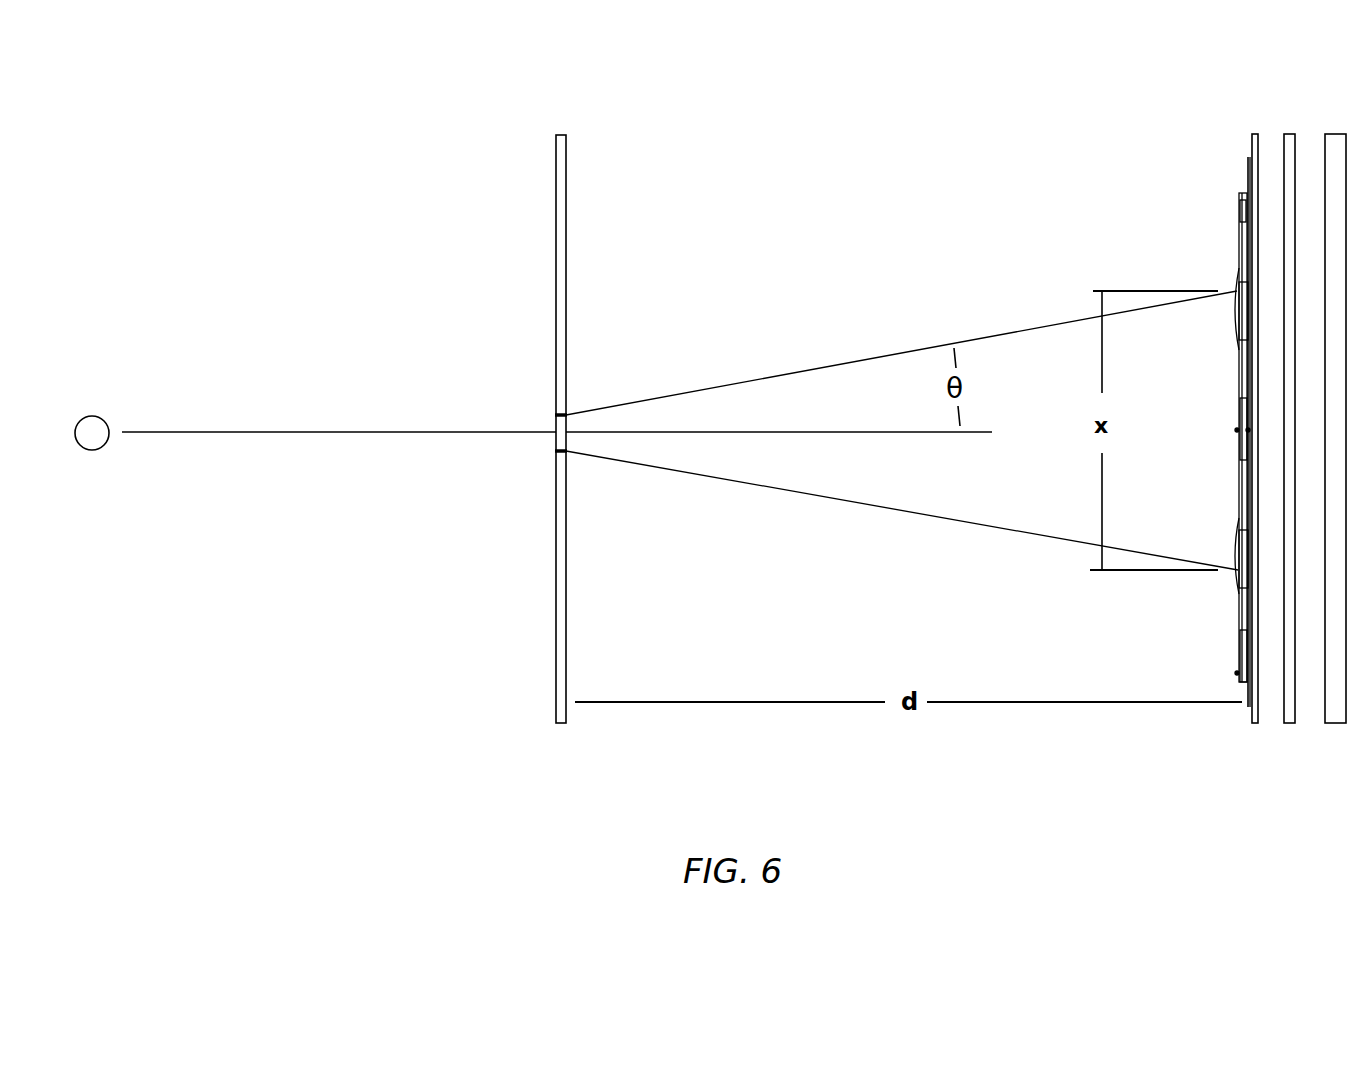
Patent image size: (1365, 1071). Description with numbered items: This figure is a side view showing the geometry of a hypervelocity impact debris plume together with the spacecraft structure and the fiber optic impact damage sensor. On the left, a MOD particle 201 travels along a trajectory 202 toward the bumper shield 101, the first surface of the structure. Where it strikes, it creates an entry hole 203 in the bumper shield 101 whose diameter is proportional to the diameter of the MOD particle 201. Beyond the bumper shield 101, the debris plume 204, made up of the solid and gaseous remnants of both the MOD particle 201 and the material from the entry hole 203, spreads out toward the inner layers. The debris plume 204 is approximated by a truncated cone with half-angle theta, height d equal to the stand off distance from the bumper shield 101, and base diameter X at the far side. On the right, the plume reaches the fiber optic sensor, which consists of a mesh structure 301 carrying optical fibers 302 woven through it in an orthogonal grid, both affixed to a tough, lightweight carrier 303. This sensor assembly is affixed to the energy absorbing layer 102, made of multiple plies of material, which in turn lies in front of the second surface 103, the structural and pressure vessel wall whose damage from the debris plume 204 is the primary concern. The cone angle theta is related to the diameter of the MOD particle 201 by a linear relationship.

The bumper shield 101 is at (558, 123).
The energy absorbing layer 102 is at (1278, 122).
The second surface 103 is at (1323, 117).
The MOD particle 201 is at (91, 410).
The trajectory 202 is at (212, 425).
The entry hole 203 is at (550, 427).
The debris plume 204 is at (737, 370).
The mesh structure 301 is at (1235, 208).
The optical fibers 302 is at (1245, 173).
The carrier 303 is at (1250, 127).